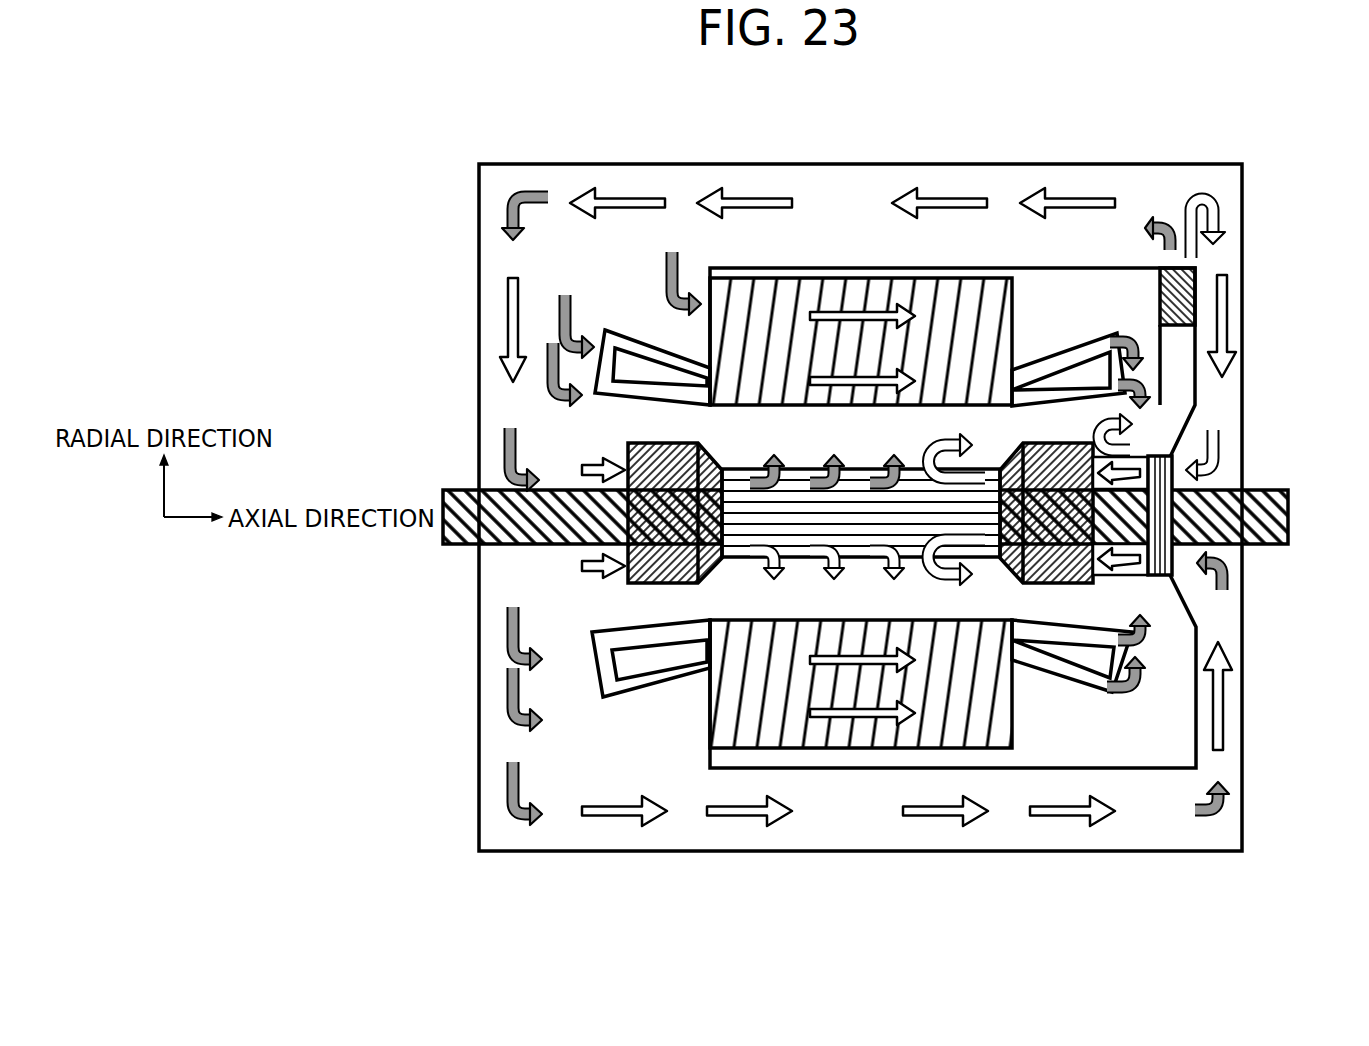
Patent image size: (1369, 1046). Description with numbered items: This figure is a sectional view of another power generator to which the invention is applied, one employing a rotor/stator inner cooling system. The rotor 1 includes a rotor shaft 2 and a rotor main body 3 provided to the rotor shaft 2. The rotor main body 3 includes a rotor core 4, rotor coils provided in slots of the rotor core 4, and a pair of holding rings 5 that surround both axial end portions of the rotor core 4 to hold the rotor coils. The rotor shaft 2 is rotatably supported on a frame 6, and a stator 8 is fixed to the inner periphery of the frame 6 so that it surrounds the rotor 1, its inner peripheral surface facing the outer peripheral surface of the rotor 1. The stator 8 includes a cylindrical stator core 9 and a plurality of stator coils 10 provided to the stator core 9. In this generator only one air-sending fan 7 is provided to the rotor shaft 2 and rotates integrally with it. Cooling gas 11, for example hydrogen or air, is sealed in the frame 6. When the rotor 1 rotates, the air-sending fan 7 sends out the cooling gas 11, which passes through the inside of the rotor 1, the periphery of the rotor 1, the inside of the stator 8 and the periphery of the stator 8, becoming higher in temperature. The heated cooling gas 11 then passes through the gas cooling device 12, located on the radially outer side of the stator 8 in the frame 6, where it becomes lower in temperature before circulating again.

The rotor 1 is at (988, 345).
The rotor shaft 2 is at (1213, 527).
The rotor main body 3 is at (812, 888).
The rotor core 4 is at (850, 528).
The holding ring 5 is at (658, 548).
The frame 6 is at (910, 165).
The air-sending fan 7 is at (1185, 465).
The stator 8 is at (873, 285).
The stator core 9 is at (828, 298).
The stator coil 10 is at (623, 332).
The cooling gas 11 is at (1228, 325).
The gas cooling device 12 is at (1152, 268).